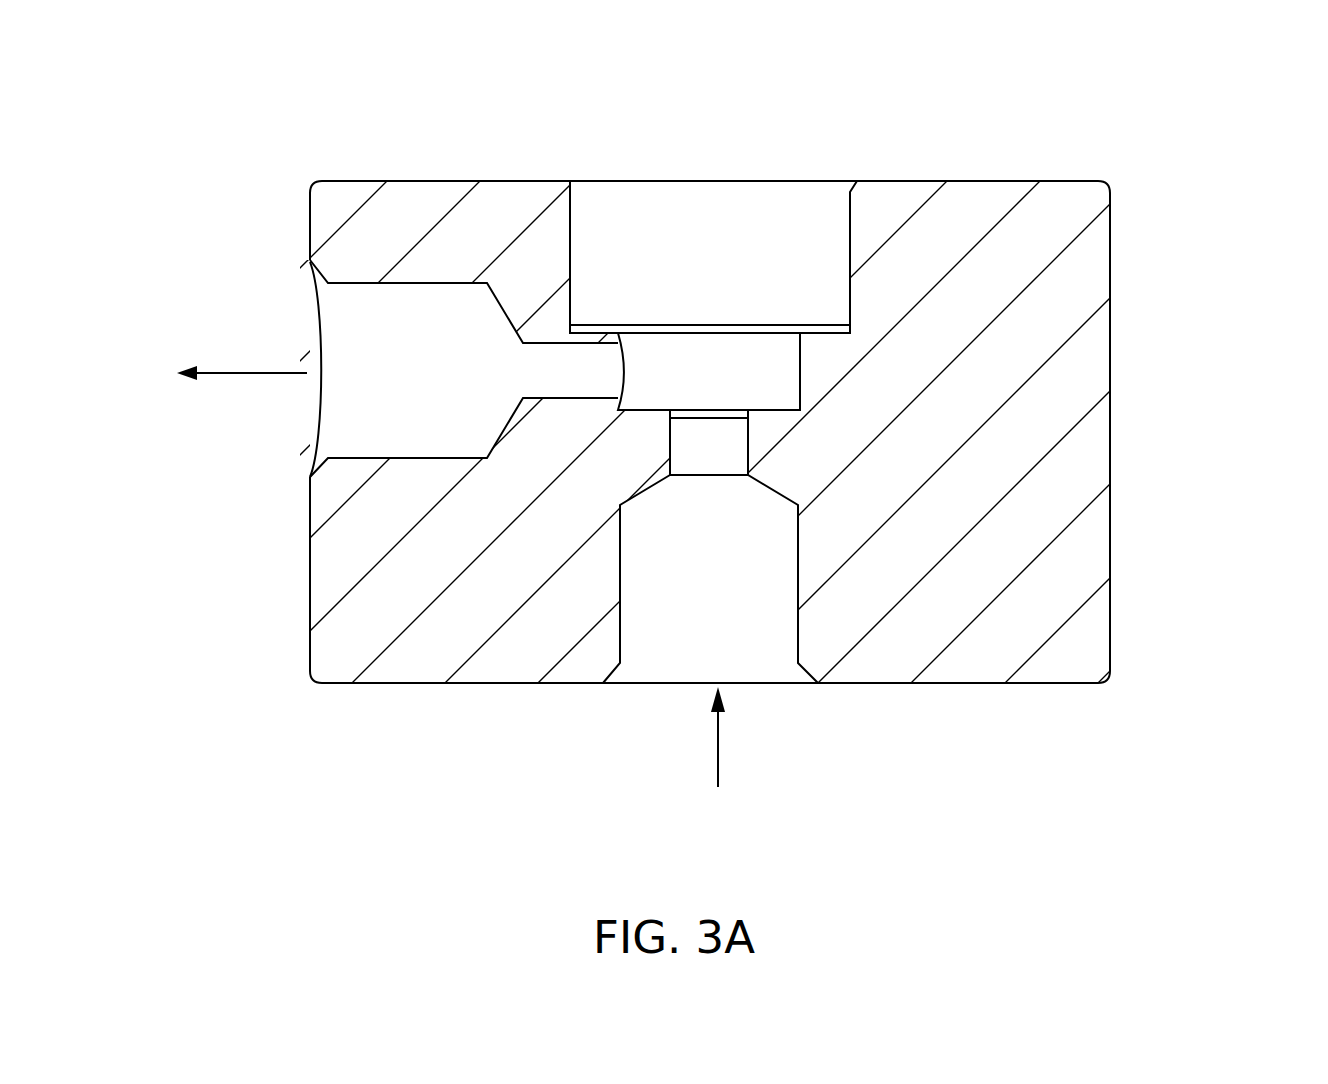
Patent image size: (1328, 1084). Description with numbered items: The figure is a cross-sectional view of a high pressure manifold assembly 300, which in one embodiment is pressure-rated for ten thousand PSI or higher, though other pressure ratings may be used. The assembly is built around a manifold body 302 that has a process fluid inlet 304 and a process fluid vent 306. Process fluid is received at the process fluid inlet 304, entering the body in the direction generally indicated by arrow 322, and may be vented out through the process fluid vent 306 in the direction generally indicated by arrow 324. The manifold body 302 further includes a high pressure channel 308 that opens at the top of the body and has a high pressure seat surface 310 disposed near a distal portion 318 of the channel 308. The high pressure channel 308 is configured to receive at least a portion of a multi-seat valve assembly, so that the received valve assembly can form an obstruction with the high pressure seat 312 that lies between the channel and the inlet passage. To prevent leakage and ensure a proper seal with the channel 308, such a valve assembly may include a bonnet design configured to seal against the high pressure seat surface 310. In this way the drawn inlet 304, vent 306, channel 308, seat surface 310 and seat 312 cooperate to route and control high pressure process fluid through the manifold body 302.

The high pressure manifold assembly 300 is at (664, 415).
The manifold body 302 is at (1110, 242).
The process fluid inlet 304 is at (745, 685).
The process fluid vent 306 is at (313, 308).
The high pressure channel 308 is at (745, 197).
The high pressure seat surface 310 is at (597, 323).
The high pressure seat 312 is at (722, 410).
The distal portion 318 is at (830, 308).
The arrow 322 is at (717, 755).
The arrow 324 is at (238, 373).